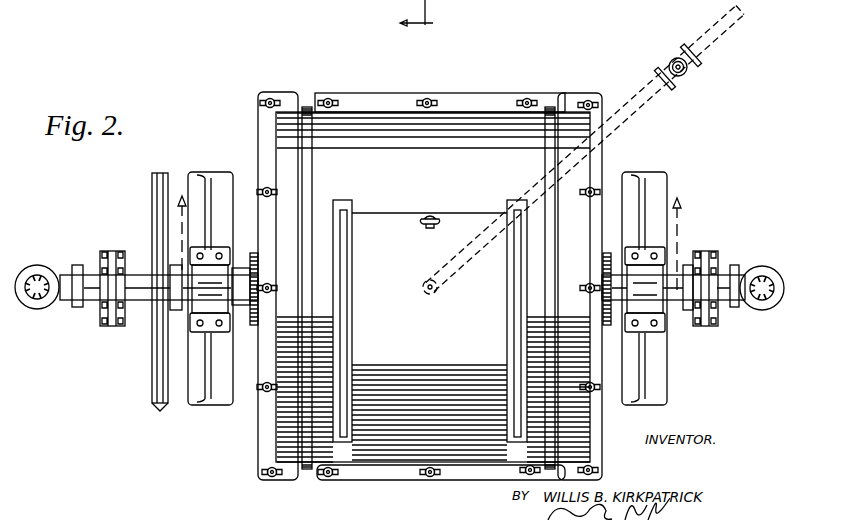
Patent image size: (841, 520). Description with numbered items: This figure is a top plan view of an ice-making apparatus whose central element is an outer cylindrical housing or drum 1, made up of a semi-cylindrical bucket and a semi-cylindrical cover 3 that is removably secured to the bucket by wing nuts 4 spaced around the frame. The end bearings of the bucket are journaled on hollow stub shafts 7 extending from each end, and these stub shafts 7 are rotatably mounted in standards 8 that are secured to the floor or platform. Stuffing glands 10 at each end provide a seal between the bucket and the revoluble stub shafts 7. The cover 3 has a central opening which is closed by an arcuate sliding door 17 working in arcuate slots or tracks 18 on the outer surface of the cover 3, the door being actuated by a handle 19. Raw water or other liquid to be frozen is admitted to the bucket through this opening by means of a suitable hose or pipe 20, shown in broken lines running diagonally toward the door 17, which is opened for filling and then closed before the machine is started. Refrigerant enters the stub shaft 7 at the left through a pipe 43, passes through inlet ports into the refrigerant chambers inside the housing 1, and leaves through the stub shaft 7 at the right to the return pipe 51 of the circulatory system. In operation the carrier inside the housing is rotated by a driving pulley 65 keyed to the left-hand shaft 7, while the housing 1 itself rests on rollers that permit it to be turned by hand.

The cylindrical housing 1 is at (270, 437).
The semi-cylindrical cover 3 is at (465, 125).
The wing nuts 4 is at (315, 105).
The hollow stub shafts 7 is at (240, 325).
The standards 8 is at (196, 178).
The stuffing glands 10 is at (264, 279).
The arcuate sliding door 17 is at (379, 225).
The arcuate slots or tracks 18 is at (353, 345).
The handle 19 is at (433, 218).
The hose or pipe 20 is at (712, 25).
The pipe 43 is at (39, 275).
The return pipe 51 is at (756, 306).
The driving pulley 65 is at (150, 190).